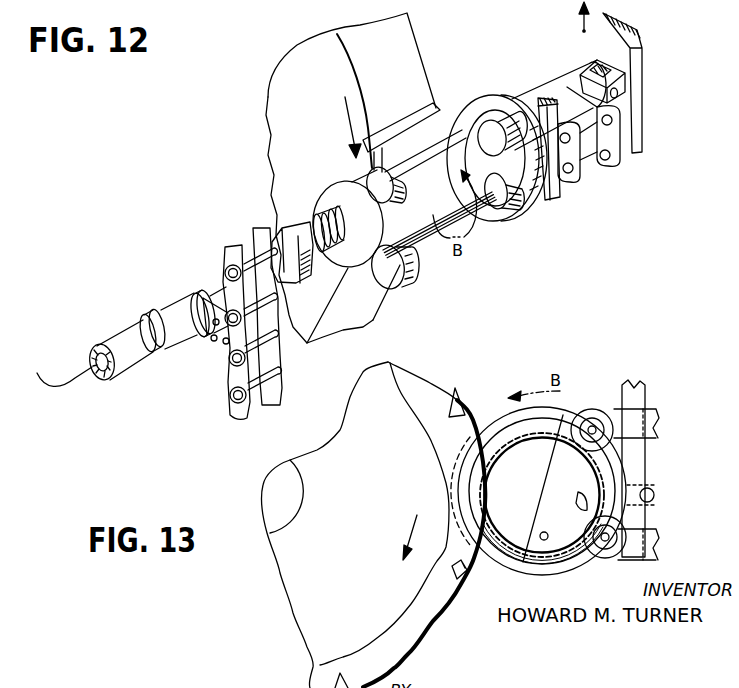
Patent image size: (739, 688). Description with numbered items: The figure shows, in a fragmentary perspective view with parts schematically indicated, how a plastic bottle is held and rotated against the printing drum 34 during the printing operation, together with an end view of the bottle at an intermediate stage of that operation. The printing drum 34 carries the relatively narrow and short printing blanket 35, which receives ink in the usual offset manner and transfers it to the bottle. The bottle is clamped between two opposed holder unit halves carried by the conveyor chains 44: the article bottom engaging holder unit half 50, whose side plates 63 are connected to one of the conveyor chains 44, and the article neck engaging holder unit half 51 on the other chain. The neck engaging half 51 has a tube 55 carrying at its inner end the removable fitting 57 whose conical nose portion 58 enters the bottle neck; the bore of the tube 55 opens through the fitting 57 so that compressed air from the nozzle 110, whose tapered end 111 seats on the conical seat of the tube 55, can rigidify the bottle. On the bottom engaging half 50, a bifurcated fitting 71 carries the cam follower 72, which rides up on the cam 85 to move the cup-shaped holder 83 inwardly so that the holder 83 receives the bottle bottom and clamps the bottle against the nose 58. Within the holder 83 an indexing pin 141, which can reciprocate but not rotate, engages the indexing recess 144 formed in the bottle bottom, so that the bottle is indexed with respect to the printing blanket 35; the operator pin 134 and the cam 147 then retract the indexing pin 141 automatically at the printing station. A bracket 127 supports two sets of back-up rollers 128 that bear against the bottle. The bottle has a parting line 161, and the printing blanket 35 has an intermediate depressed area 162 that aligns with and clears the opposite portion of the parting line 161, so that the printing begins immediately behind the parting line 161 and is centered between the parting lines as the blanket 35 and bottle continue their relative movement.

In FIG. 12, the printing drum 34 is at (405, 53).
In FIG. 12, the printing blanket 35 is at (432, 118).
In FIG. 13, the printing blanket 35 is at (430, 373).
In FIG. 12, the conveyor chain 44 is at (231, 403).
In FIG. 12, the article bottom engaging holder unit half 50 is at (559, 70).
In FIG. 13, the article bottom engaging holder unit half 50 is at (502, 414).
In FIG. 12, the article neck engaging holder unit half 51 is at (206, 279).
In FIG. 12, the tube 55 is at (172, 310).
In FIG. 12, the removable fitting 57 is at (278, 232).
In FIG. 12, the conical nose portion 58 is at (316, 222).
In FIG. 12, the side plates 63 is at (594, 168).
In FIG. 12, the bifurcated fitting 71 is at (619, 93).
In FIG. 12, the cam follower 72 is at (622, 72).
In FIG. 12, the cup-shaped holder 83 is at (515, 196).
In FIG. 13, the cup-shaped holder 83 is at (520, 560).
In FIG. 12, the cam 85 is at (642, 80).
In FIG. 12, the nozzle 110 is at (130, 348).
In FIG. 12, the tapered end 111 is at (148, 318).
In FIG. 13, the bracket 127 is at (656, 426).
In FIG. 12, the back-up rollers 128 is at (370, 178).
In FIG. 13, the back-up rollers 128 is at (588, 405).
In FIG. 12, the operator pin 134 is at (568, 173).
In FIG. 13, the operator pin 134 is at (655, 490).
In FIG. 13, the indexing pin 141 is at (547, 534).
In FIG. 13, the indexing recess 144 is at (585, 502).
In FIG. 12, the cam 147 is at (545, 100).
In FIG. 13, the cam 147 is at (640, 398).
In FIG. 12, the parting line 161 is at (434, 158).
In FIG. 13, the parting line 161 is at (538, 481).
In FIG. 13, the intermediate depressed area 162 is at (457, 578).